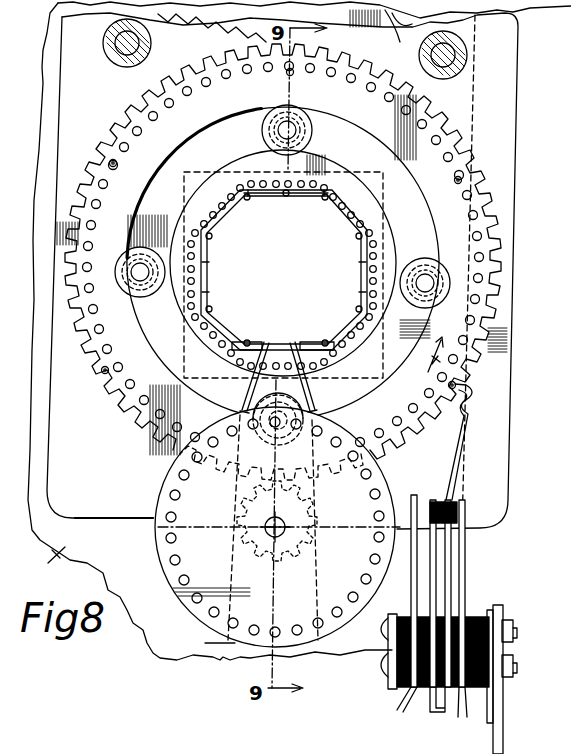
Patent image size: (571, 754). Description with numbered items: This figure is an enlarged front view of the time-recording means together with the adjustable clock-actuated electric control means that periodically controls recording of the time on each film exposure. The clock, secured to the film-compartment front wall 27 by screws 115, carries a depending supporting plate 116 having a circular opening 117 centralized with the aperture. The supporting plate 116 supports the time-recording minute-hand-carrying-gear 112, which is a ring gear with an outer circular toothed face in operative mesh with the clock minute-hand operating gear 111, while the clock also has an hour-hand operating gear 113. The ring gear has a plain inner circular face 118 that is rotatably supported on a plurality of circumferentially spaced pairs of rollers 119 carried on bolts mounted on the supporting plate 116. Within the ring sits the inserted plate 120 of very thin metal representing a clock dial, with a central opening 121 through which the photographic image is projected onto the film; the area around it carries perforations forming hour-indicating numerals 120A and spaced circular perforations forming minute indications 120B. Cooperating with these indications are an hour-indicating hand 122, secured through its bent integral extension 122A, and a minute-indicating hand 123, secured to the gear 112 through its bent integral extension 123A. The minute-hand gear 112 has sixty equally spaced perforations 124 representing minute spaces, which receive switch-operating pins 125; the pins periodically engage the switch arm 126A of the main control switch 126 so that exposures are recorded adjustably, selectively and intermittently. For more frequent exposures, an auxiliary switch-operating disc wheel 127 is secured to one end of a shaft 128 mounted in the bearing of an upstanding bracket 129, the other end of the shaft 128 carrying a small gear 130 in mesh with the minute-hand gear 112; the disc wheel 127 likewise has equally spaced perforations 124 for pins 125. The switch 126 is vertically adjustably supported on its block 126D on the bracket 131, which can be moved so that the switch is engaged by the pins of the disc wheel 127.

The film-compartment front wall 27 is at (42, 558).
The minute-hand operating gear 111 is at (398, 30).
The minute-hand-carrying-gear 112 is at (497, 233).
The hour-hand operating gear 113 is at (247, 32).
The screws 115 is at (117, 40).
The supporting plate 116 is at (505, 75).
The circular opening 117 is at (393, 240).
The plain inner circular faces 118 is at (367, 113).
The rollers 119 is at (273, 108).
The inserted plate 120 is at (248, 178).
The hour-indicating numerals 120A is at (242, 198).
The minute indications 120B is at (194, 310).
The central opening 121 is at (350, 247).
The hour-indicating hand 122 is at (267, 338).
The bent integral extension 122A is at (247, 402).
The minute-indicating hand 123 is at (322, 323).
The bent integral extension 123A is at (300, 402).
The perforations 124 is at (135, 127).
The switch-operating pins 125 is at (115, 166).
The main control switch 126 is at (479, 572).
The switch arm 126A is at (468, 428).
The block 126D is at (477, 615).
The auxiliary switch-operating disc wheel 127 is at (157, 547).
The shaft 128 is at (267, 527).
The upstanding bracket 129 is at (220, 642).
The small gear 130 is at (316, 550).
The bracket 131 is at (503, 738).